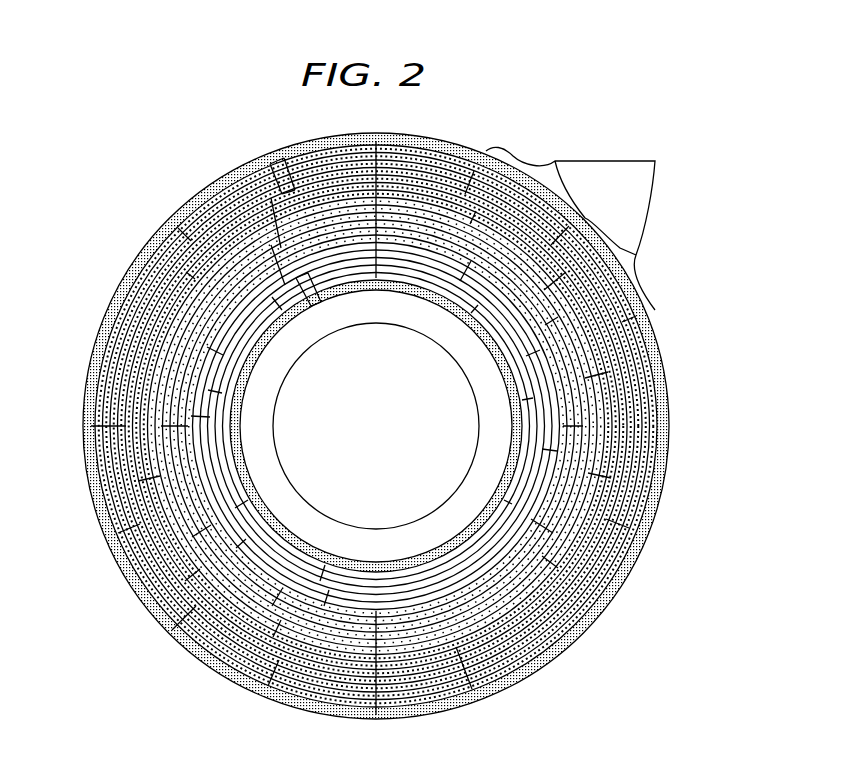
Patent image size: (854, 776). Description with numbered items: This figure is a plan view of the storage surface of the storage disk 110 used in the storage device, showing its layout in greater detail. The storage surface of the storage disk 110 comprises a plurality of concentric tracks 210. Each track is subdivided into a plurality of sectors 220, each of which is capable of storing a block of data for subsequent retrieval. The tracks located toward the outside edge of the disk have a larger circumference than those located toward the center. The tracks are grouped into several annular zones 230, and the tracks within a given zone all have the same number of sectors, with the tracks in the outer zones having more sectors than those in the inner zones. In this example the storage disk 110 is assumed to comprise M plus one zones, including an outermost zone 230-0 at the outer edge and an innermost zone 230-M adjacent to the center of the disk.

The storage disk 110 is at (128, 192).
The concentric tracks 210 is at (556, 630).
The sectors 220 is at (592, 228).
The annular zones 230 is at (586, 457).
The outermost zone 230-0 is at (262, 152).
The innermost zone 230-M is at (299, 282).